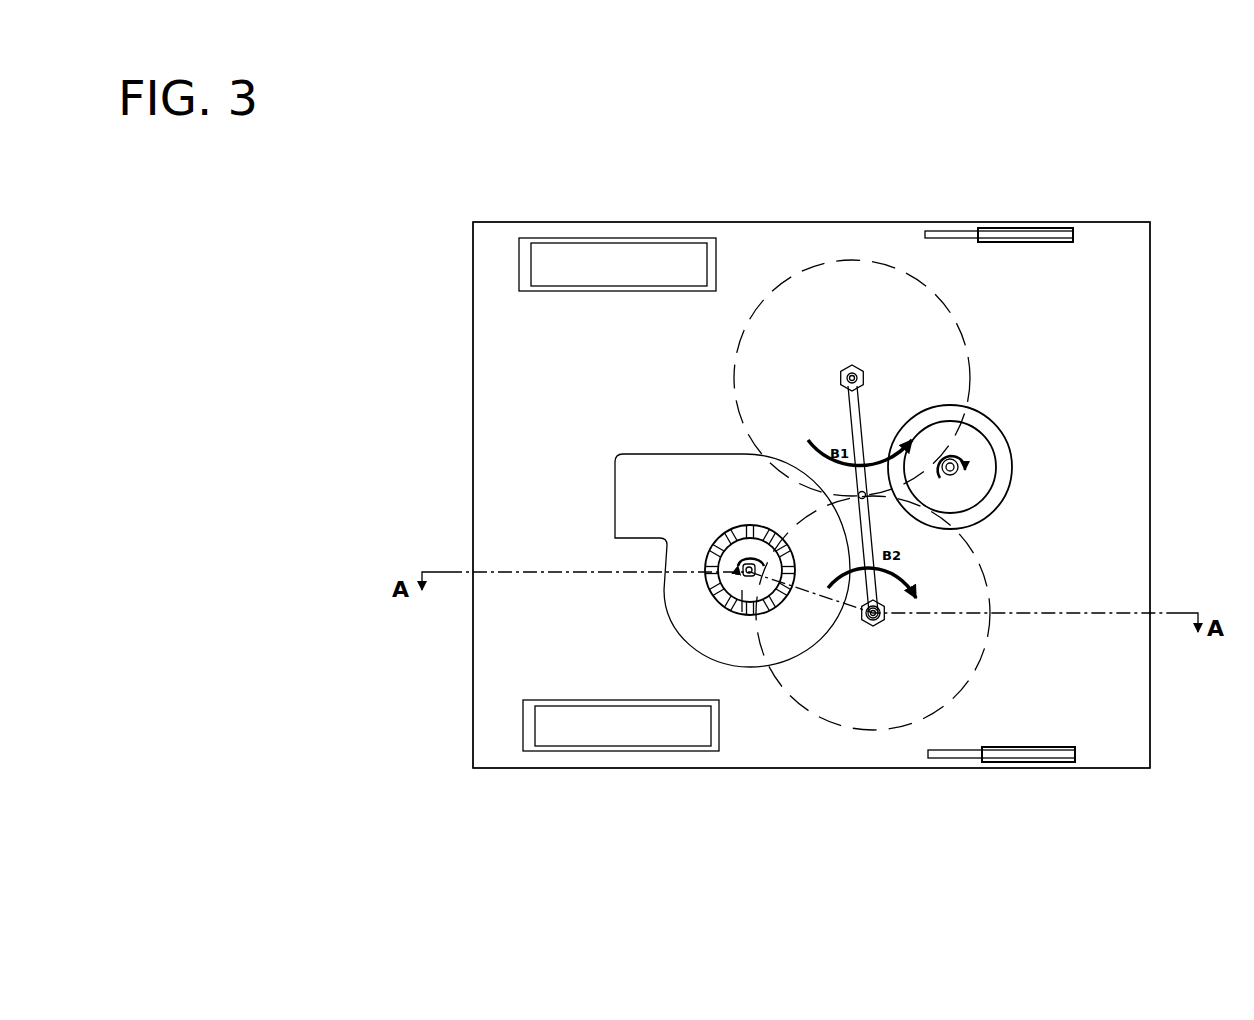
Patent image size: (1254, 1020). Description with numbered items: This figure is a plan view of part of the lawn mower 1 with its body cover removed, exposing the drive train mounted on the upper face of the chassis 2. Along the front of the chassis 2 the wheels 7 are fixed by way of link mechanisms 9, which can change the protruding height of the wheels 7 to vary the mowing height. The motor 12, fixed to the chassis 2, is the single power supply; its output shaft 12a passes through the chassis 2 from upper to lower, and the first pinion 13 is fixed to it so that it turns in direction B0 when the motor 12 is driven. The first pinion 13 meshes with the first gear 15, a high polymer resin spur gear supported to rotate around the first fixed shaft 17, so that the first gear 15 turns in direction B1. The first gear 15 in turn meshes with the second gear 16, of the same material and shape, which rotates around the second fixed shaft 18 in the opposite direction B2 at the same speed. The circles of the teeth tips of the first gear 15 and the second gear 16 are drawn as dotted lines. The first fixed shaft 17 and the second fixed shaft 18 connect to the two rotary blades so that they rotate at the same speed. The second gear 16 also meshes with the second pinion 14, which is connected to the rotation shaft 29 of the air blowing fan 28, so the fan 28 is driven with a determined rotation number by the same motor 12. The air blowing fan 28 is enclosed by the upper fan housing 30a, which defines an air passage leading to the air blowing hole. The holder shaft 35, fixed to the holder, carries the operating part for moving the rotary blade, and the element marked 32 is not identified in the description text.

The lawn mower 1 is at (403, 164).
The chassis 2 is at (517, 358).
The wheels 7 is at (603, 262).
The link mechanisms 9 is at (1005, 238).
The motor 12 is at (985, 458).
The output shaft 12a is at (958, 475).
The first pinion 13 is at (958, 480).
The second pinion 14 is at (745, 595).
The first gear 15 is at (802, 262).
The second gear 16 is at (985, 660).
The first fixed shaft 17 is at (798, 284).
The second fixed shaft 18 is at (872, 628).
The air blowing fan 28 is at (720, 534).
The rotation shaft 29 is at (745, 578).
The upper fan housing 30a is at (633, 478).
The nut 32 is at (855, 362).
The holder shaft 35 is at (862, 410).